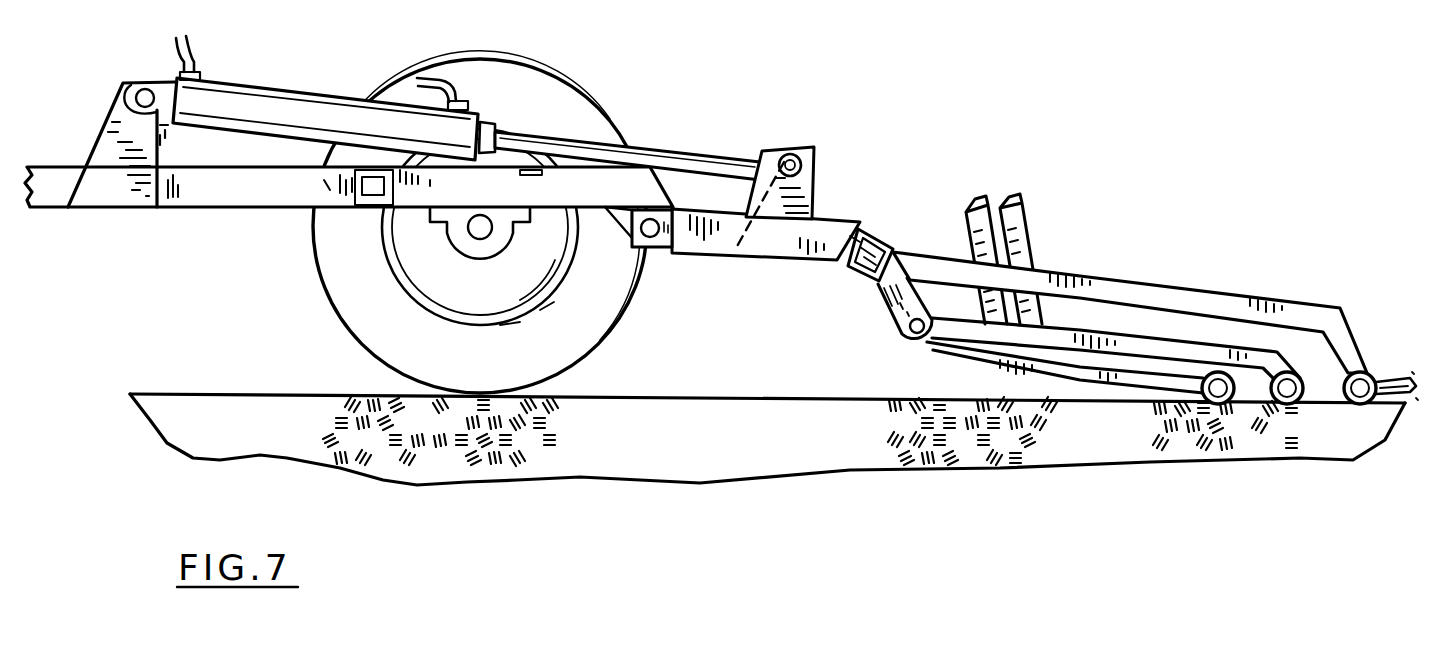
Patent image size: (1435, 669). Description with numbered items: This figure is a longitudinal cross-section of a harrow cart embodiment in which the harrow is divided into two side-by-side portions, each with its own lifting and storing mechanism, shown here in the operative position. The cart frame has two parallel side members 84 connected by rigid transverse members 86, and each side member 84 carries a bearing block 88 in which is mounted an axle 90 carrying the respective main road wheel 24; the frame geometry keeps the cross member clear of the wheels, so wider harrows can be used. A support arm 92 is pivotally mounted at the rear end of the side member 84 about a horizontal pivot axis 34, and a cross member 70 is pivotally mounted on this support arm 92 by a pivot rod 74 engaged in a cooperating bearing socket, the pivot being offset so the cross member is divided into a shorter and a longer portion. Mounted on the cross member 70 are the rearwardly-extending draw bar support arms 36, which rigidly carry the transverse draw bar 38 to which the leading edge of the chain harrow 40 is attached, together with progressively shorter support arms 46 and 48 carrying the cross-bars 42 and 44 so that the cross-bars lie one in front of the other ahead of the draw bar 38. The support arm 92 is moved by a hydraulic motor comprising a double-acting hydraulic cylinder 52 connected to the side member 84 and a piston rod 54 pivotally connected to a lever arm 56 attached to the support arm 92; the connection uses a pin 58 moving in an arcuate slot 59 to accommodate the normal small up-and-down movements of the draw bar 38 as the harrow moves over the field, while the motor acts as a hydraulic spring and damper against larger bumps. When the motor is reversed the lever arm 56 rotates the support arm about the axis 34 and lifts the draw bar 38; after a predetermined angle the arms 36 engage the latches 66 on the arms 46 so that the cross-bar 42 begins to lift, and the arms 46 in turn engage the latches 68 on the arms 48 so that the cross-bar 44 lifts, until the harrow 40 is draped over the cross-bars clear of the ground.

The main road wheel 24 is at (345, 303).
The horizontal pivot axis 34 is at (652, 240).
The draw bar support arm 36 is at (1128, 281).
The draw bar 38 is at (1340, 410).
The chain harrow 40 is at (1396, 372).
The cross-bar 42 is at (1310, 410).
The cross-bar 44 is at (1238, 410).
The support arm 46 is at (1080, 345).
The support arm 48 is at (1127, 380).
The double-acting hydraulic cylinder 52 is at (290, 101).
The piston rod 54 is at (668, 145).
The lever arm 56 is at (808, 175).
The pin 58 is at (777, 155).
The arcuate slot 59 is at (797, 145).
The latch 66 is at (968, 210).
The latch 68 is at (1022, 207).
The cross member 70 is at (878, 234).
The pivot rod 74 is at (862, 270).
The side member 84 is at (242, 195).
The rigid transverse member 86 is at (368, 210).
The bearing block 88 is at (468, 246).
The axle 90 is at (466, 229).
The support arm 92 is at (768, 252).